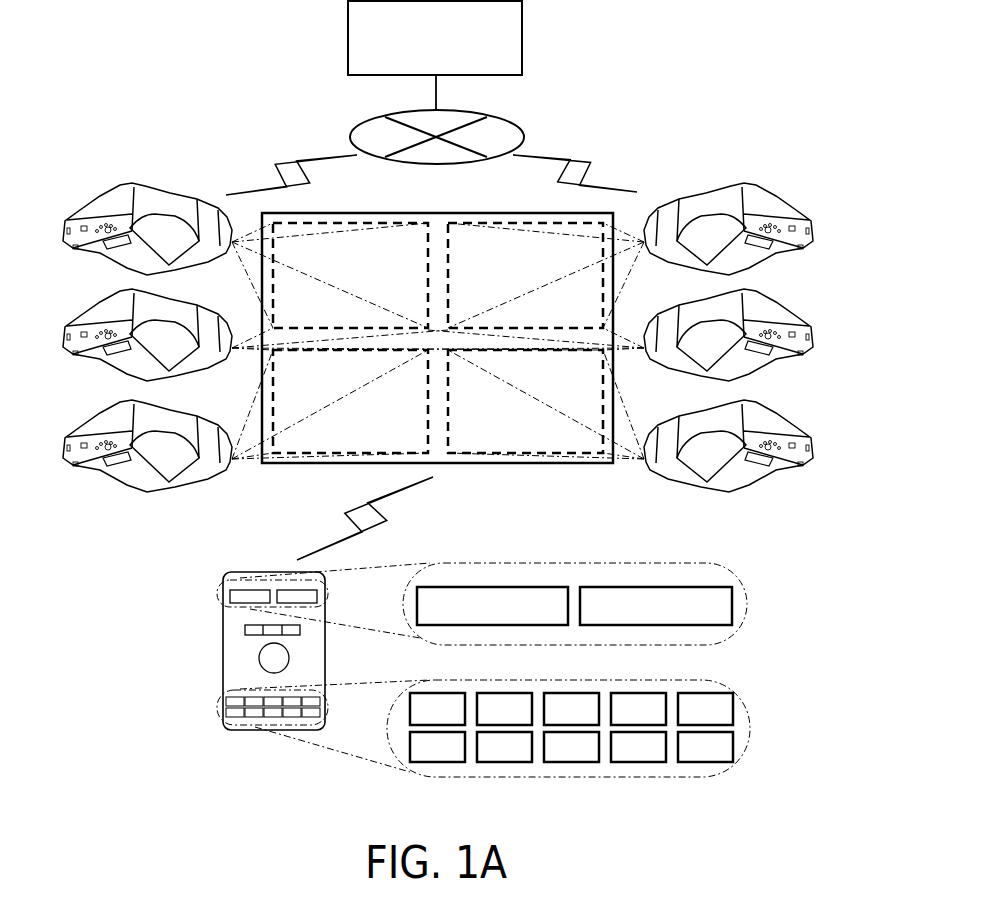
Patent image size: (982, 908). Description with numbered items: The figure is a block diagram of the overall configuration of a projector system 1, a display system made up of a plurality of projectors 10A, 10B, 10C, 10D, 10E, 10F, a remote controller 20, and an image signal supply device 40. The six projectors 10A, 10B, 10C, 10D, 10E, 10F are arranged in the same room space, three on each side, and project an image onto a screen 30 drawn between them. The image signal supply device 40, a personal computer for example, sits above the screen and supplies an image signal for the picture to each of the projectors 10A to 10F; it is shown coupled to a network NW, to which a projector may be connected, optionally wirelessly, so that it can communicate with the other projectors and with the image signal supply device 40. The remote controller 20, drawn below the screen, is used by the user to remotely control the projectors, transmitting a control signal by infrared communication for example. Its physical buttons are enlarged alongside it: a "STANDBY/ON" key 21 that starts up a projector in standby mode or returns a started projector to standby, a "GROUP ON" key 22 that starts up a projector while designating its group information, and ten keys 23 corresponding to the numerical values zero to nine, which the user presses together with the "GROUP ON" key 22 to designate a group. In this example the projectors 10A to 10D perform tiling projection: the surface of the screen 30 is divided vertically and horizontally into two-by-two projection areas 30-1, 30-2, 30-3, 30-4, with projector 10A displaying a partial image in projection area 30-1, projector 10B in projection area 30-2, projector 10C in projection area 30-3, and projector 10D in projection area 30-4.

The projector system 1 is at (668, 55).
The projector 10A is at (143, 190).
The projector 10B is at (731, 190).
The projector 10C is at (86, 317).
The projector 10D is at (788, 317).
The projector 10E is at (88, 420).
The projector 10F is at (806, 400).
The remote controller 20 is at (243, 572).
The "STANDBY/ON" key 21 is at (467, 590).
The "GROUP ON" key 22 is at (605, 590).
The ten keys 23 is at (718, 685).
The screen 30 is at (410, 208).
The projection area 30-1 is at (385, 300).
The projection area 30-2 is at (540, 300).
The projection area 30-3 is at (385, 400).
The projection area 30-4 is at (540, 400).
The image signal supply device 40 is at (522, 45).
The network NW is at (510, 133).